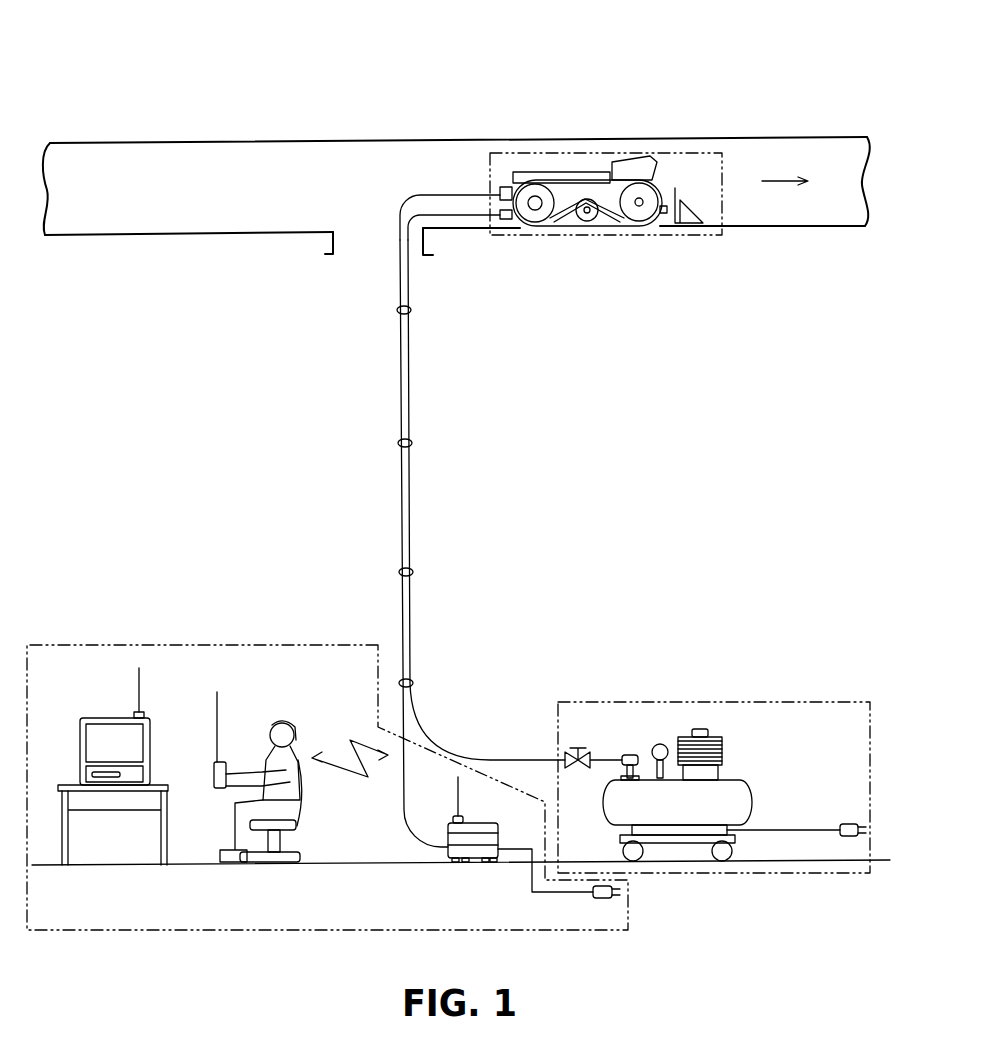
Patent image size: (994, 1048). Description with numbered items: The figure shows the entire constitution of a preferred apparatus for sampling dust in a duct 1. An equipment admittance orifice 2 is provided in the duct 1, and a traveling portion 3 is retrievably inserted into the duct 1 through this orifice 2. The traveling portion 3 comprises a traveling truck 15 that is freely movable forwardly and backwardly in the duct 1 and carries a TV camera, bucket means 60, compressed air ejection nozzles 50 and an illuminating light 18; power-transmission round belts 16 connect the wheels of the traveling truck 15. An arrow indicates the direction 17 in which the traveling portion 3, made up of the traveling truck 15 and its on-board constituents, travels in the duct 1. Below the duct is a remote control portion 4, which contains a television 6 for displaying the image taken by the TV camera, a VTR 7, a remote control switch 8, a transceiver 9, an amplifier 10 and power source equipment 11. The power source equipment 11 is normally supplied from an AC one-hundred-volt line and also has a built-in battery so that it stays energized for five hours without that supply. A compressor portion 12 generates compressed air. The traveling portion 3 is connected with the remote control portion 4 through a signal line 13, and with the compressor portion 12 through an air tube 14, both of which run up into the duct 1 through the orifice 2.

The duct 1 is at (275, 138).
The equipment admittance orifice 2 is at (368, 258).
The traveling portion 3 is at (623, 205).
The remote control portion 4 is at (200, 643).
The television 6 is at (90, 718).
The VTR 7 is at (84, 770).
The remote control switch 8 is at (212, 770).
The transceiver 9 is at (470, 823).
The amplifier 10 is at (494, 838).
The power source equipment 11 is at (466, 862).
The compressor portion 12 is at (672, 700).
The signal line 13 is at (403, 818).
The air tube 14 is at (433, 737).
The traveling truck 15 is at (605, 223).
The power-transmission round belt 16 is at (563, 212).
The traveling direction 17 is at (778, 180).
The illuminating light 18 is at (626, 165).
The compressed air ejection nozzles 50 is at (664, 214).
The bucket means 60 is at (690, 228).